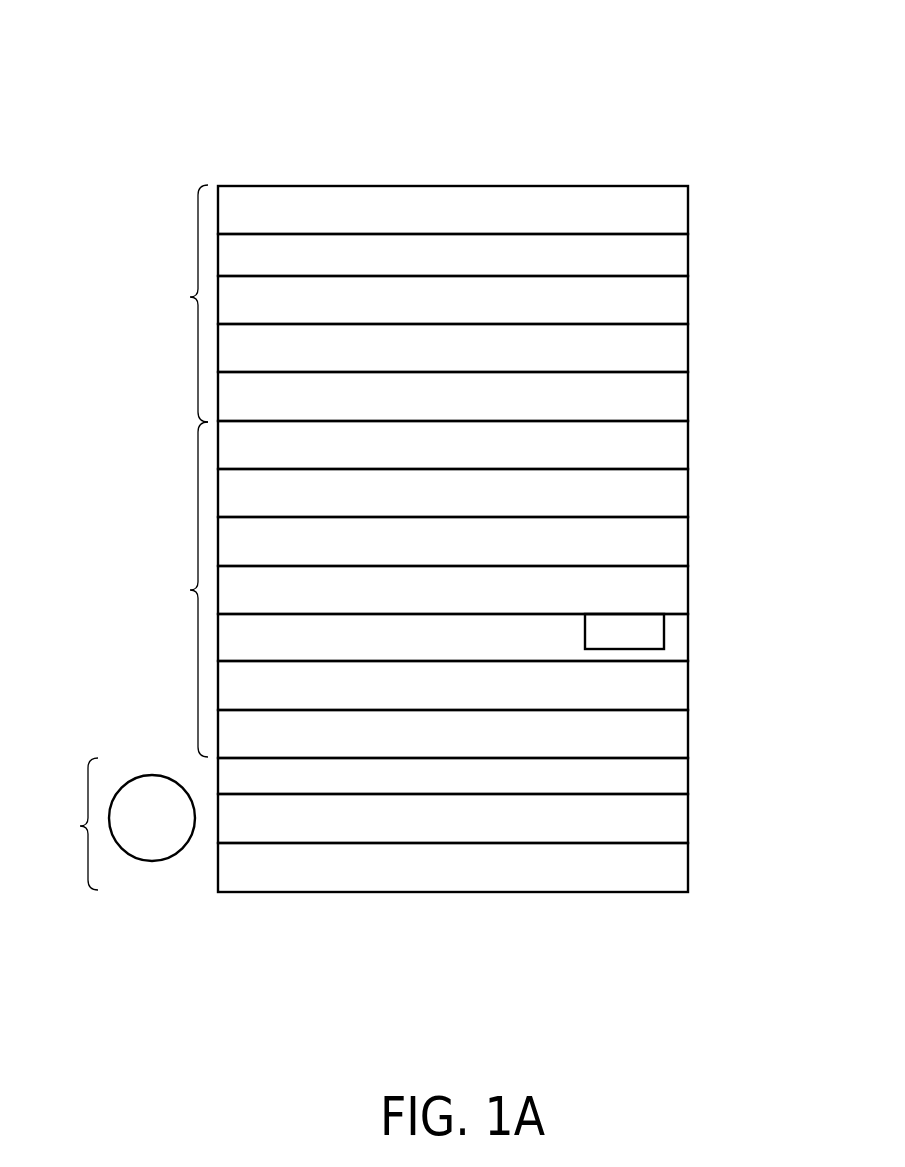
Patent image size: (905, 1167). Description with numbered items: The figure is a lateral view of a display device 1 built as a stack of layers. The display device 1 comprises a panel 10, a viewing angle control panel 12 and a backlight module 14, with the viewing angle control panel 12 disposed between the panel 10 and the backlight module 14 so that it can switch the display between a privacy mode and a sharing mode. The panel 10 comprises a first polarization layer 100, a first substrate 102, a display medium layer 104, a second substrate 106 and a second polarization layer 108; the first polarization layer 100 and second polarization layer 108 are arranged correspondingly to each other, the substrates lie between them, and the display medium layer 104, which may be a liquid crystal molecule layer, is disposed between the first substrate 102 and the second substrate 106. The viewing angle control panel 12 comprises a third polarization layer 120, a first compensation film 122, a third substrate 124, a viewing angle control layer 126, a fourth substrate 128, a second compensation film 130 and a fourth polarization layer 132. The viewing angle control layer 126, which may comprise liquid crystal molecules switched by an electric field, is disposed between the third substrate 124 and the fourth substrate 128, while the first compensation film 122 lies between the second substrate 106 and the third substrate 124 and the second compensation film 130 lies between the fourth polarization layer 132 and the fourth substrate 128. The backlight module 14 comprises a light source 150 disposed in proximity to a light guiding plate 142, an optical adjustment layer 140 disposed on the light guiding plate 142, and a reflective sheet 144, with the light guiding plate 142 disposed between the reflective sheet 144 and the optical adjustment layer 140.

The display device 1 is at (733, 67).
The panel 10 is at (181, 303).
The viewing angle control panel 12 is at (181, 589).
The backlight module 14 is at (71, 824).
The first polarization layer 100 is at (688, 208).
The first substrate 102 is at (688, 256).
The display medium layer 104 is at (688, 297).
The second substrate 106 is at (688, 346).
The second polarization layer 108 is at (688, 396).
The third polarization layer 120 is at (688, 443).
The first compensation film 122 is at (688, 488).
The third substrate 124 is at (688, 539).
The viewing angle control layer 126 is at (688, 590).
The fourth substrate 128 is at (688, 638).
The second compensation film 130 is at (688, 685).
The fourth polarization layer 132 is at (688, 731).
The optical adjustment layer 140 is at (688, 775).
The light guiding plate 142 is at (688, 815).
The reflective sheet 144 is at (688, 860).
The light source 150 is at (152, 861).